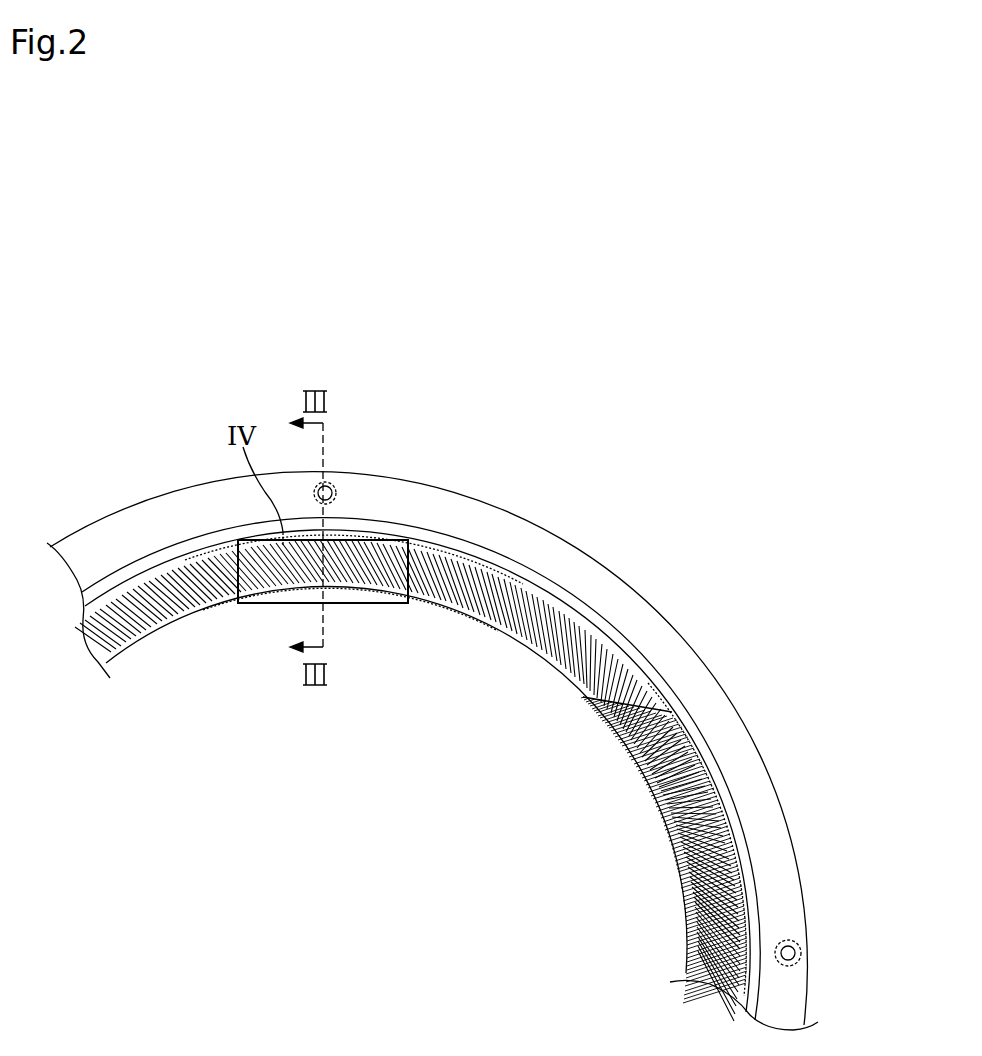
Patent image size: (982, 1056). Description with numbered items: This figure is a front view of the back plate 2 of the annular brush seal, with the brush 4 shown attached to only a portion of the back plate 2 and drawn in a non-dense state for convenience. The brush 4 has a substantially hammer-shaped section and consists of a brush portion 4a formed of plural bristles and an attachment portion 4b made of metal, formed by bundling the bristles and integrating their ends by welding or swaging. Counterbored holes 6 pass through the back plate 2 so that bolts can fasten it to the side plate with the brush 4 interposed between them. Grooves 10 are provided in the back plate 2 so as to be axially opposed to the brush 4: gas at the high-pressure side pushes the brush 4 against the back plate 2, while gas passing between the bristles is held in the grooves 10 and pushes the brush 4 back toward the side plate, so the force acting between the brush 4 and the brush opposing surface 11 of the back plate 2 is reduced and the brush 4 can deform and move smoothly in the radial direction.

The back plate 2 is at (535, 502).
The brush 4 is at (482, 769).
The brush portion 4a is at (720, 807).
The attachment portion 4b is at (712, 753).
The counterbored hole 6 is at (326, 490).
The grooves 10 is at (450, 588).
The brush opposing surface 11 is at (519, 632).